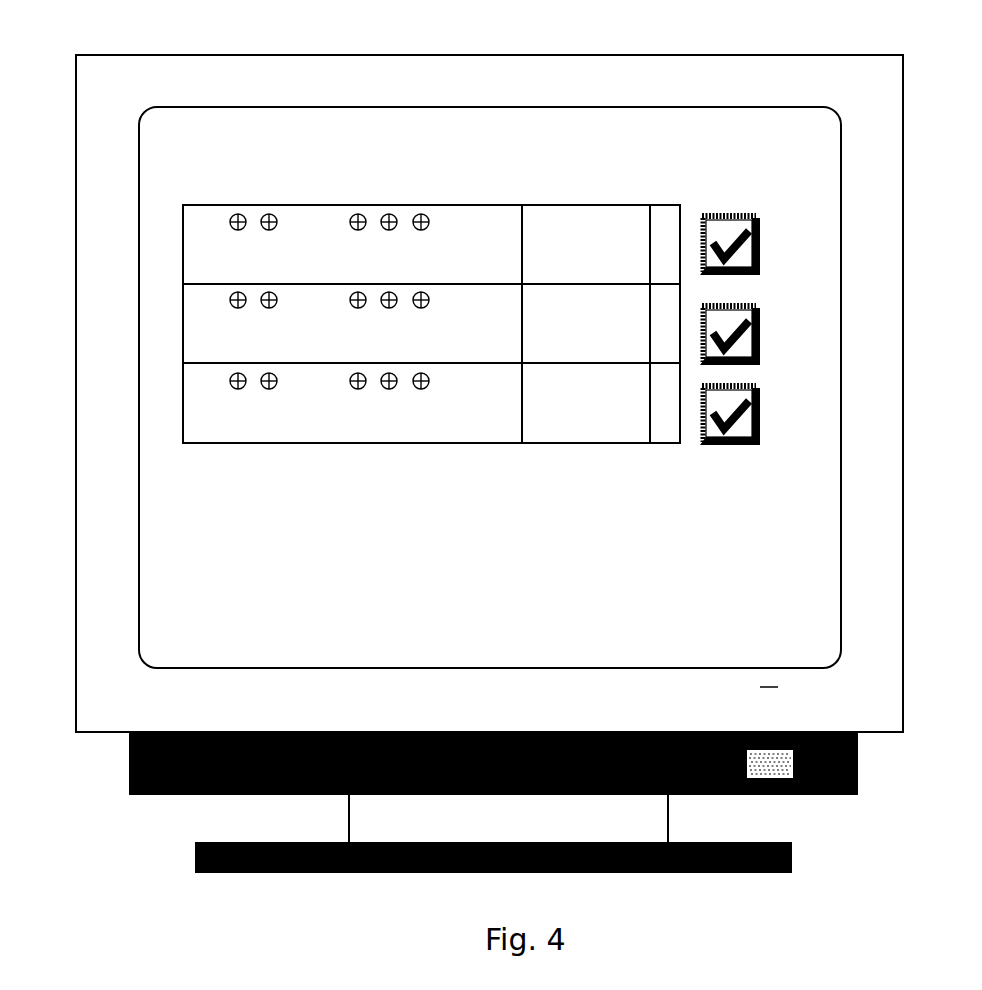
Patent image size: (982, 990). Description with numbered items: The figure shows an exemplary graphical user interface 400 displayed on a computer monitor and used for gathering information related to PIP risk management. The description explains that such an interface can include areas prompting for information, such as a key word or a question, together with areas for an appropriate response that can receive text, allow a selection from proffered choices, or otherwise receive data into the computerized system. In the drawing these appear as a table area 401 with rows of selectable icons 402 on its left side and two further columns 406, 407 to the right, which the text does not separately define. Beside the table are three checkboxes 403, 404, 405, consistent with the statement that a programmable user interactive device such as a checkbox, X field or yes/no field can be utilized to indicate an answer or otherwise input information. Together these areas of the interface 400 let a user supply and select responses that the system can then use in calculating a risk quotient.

The graphical user interface for receiving information 400 is at (124, 32).
The list table of selectable items 401 is at (263, 253).
The selection icons / buttons 402 is at (240, 213).
The checkbox for first item 403 is at (749, 245).
The checkbox for second item 404 is at (750, 335).
The checkbox for third item 405 is at (750, 415).
The table column 406 is at (587, 252).
The table column 407 is at (665, 250).